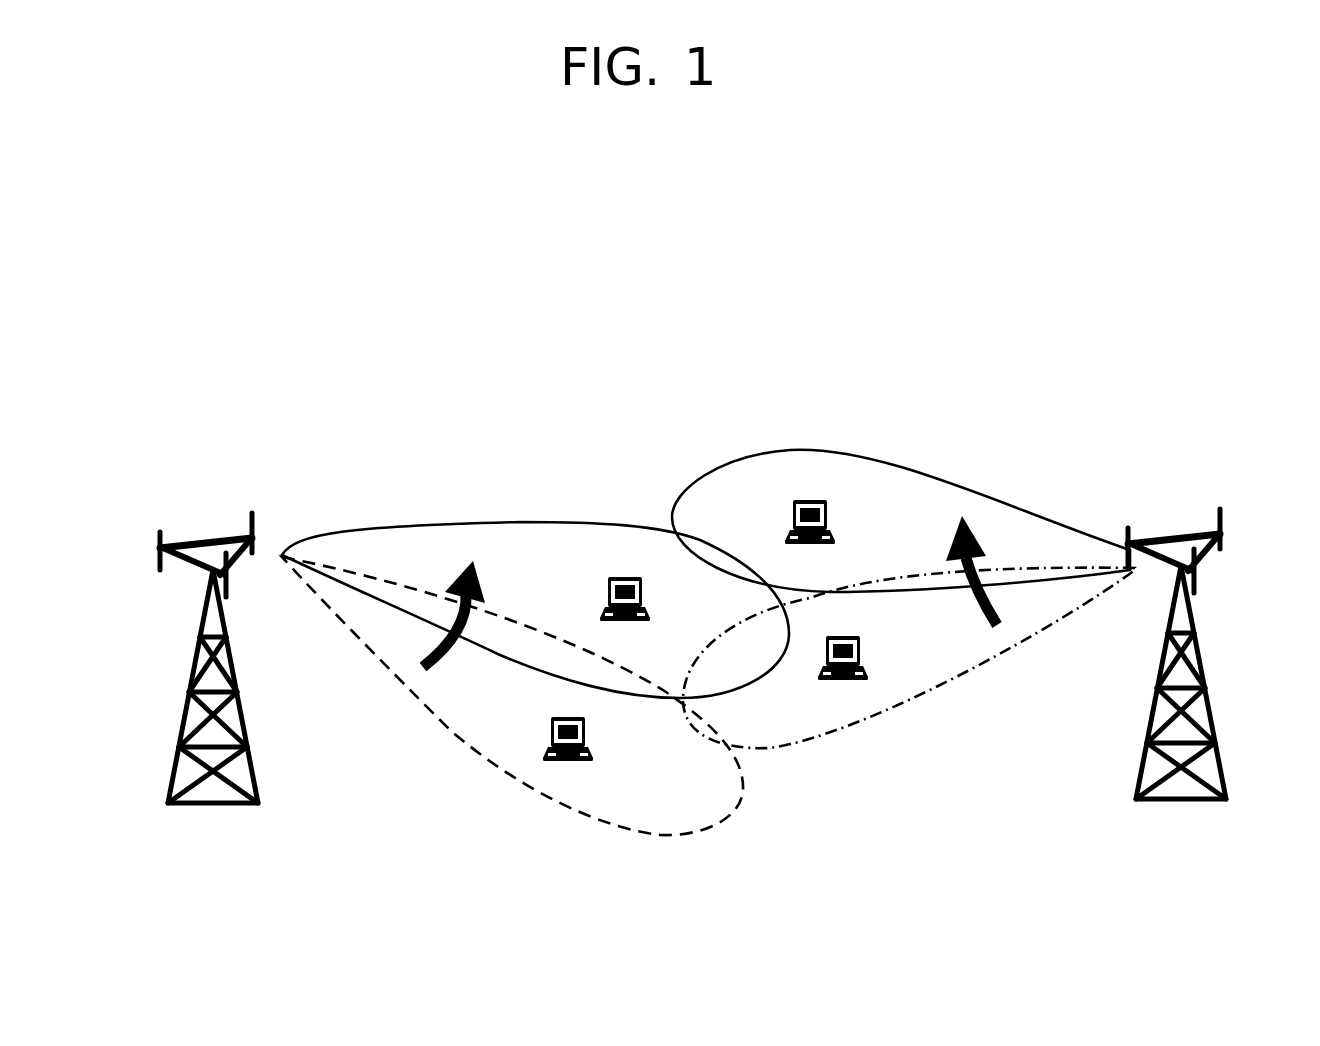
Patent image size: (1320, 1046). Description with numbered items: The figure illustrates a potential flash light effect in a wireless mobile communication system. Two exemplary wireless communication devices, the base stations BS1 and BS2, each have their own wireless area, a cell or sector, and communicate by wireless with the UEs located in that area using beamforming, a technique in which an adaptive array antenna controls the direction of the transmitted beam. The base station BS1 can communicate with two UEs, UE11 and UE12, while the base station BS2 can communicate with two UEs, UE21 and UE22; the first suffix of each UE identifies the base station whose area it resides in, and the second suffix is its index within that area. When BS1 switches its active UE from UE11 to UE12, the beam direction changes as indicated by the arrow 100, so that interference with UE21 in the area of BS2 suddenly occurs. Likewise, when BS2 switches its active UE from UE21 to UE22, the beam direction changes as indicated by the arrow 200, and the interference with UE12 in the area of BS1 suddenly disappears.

The arrow 100 is at (436, 664).
The arrow 200 is at (990, 614).
The base station BS1 is at (209, 644).
The base station BS2 is at (1177, 640).
The UE UE11 is at (539, 734).
The UE UE12 is at (596, 604).
The UE UE21 is at (882, 655).
The UE UE22 is at (850, 521).